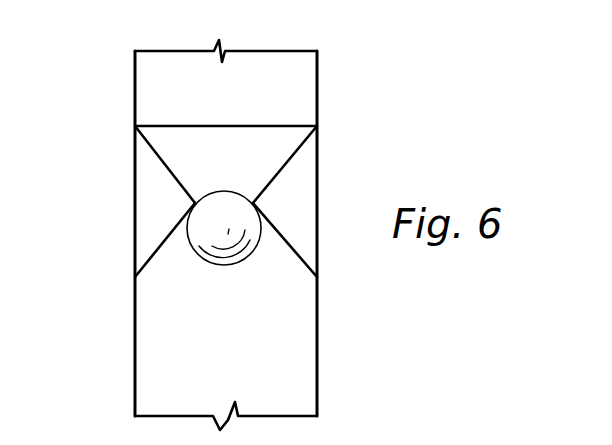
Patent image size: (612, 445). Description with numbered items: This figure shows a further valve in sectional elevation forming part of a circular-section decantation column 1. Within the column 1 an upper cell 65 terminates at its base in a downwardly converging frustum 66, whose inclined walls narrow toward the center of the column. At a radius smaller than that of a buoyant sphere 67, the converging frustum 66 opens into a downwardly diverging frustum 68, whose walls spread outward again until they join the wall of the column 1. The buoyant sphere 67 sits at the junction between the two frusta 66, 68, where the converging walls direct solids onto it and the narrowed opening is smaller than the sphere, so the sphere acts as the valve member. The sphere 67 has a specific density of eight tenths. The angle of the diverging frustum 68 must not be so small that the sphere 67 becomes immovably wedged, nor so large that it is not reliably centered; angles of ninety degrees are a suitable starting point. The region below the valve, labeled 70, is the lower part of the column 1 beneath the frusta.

The decantation column 1 is at (118, 87).
The upper cell 65 is at (236, 102).
The downwardly converging frustum 66 is at (163, 161).
The buoyant sphere 67 is at (227, 208).
The downwardly diverging frustum 68 is at (163, 240).
The lower chamber 70 is at (226, 392).